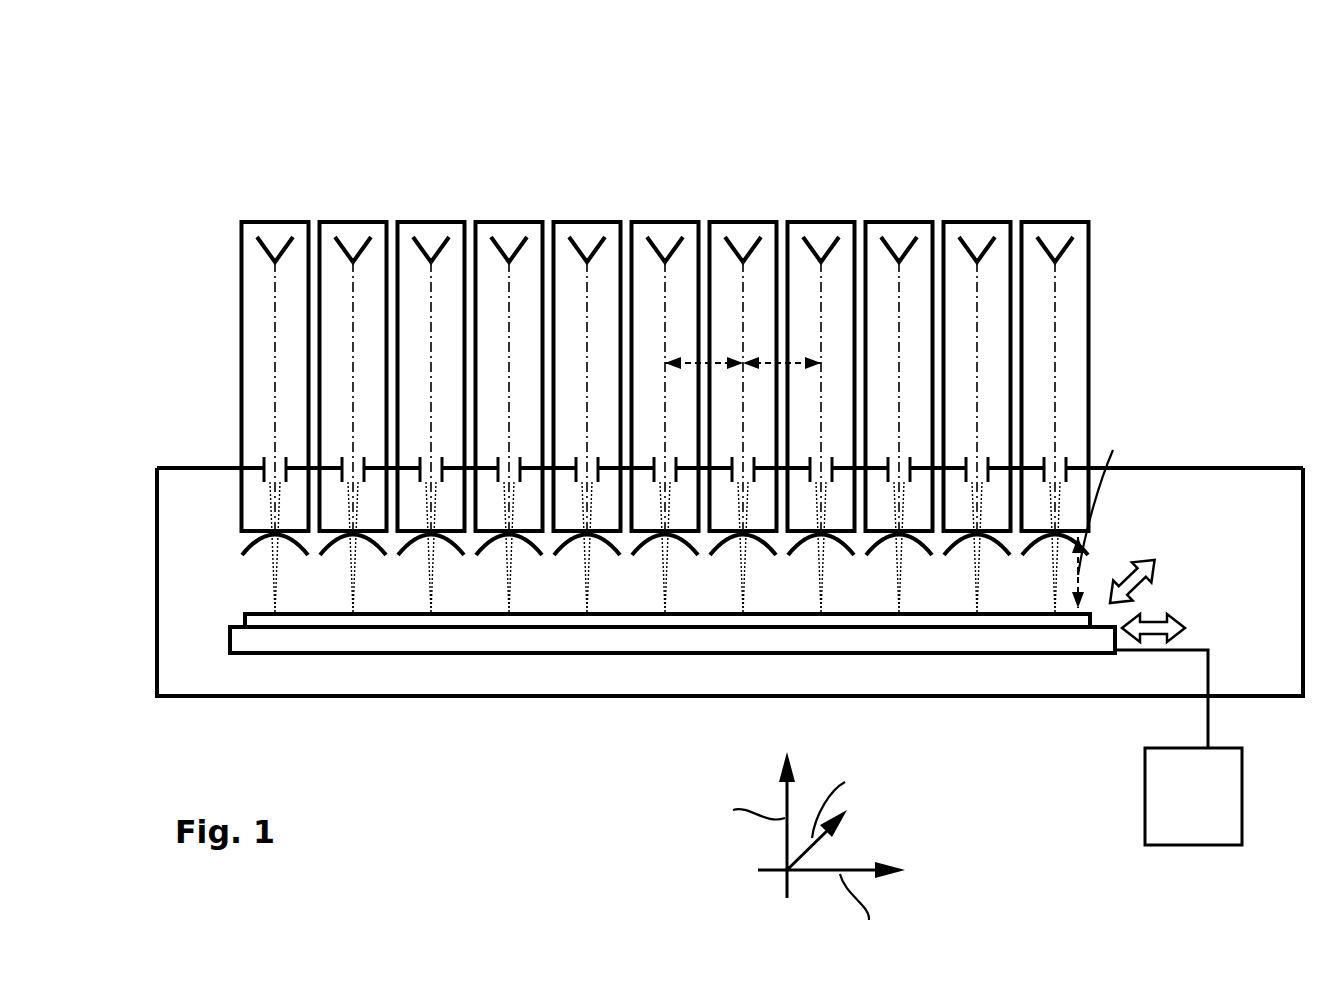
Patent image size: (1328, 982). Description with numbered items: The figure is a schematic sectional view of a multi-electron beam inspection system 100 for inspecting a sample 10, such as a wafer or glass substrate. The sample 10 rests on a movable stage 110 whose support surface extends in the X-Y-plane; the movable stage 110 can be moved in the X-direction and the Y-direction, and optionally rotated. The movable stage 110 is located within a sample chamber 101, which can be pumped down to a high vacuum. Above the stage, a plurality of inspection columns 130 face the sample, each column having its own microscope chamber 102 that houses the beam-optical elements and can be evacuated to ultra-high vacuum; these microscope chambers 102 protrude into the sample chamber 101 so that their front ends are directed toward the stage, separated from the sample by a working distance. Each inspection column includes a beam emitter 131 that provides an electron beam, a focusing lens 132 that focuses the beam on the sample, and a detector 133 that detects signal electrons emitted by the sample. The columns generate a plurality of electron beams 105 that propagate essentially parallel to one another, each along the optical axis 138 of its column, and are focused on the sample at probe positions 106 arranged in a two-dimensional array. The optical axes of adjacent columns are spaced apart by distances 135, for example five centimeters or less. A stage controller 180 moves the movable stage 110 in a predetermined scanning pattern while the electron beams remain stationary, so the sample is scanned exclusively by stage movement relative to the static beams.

The multi-electron beam inspection system 100 is at (978, 108).
The sample chamber 101 is at (192, 466).
The microscope chamber 102 is at (252, 222).
The electron beams 105 is at (505, 510).
The probe positions 106 is at (509, 613).
The sample 10 is at (245, 619).
The movable stage 110 is at (237, 647).
The inspection columns 130 is at (448, 210).
The beam emitter 131 is at (258, 248).
The focusing lens 132 is at (263, 463).
The detector 133 is at (247, 555).
The distances between optical axes 135 is at (718, 358).
The optical axis 138 is at (353, 308).
The stage controller 180 is at (1196, 822).